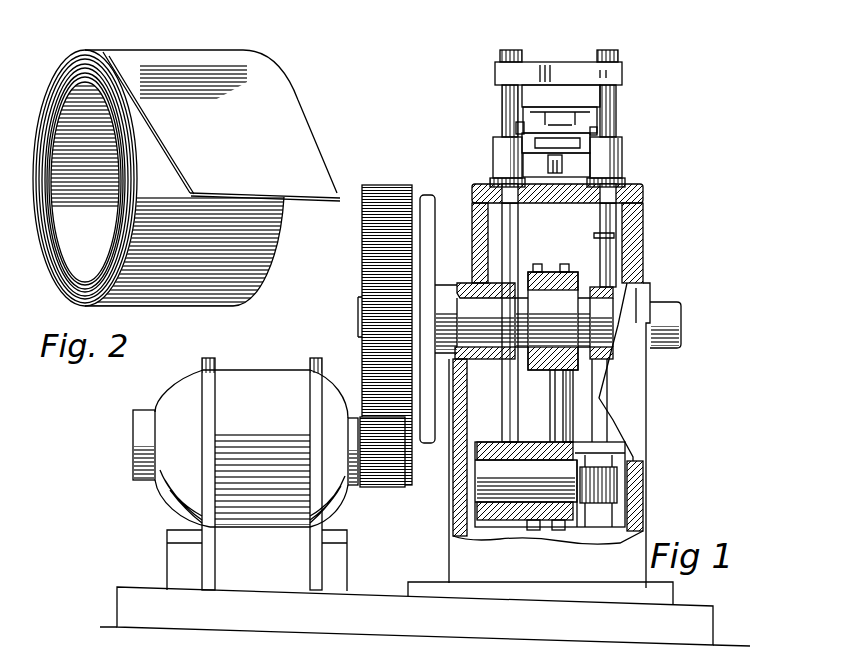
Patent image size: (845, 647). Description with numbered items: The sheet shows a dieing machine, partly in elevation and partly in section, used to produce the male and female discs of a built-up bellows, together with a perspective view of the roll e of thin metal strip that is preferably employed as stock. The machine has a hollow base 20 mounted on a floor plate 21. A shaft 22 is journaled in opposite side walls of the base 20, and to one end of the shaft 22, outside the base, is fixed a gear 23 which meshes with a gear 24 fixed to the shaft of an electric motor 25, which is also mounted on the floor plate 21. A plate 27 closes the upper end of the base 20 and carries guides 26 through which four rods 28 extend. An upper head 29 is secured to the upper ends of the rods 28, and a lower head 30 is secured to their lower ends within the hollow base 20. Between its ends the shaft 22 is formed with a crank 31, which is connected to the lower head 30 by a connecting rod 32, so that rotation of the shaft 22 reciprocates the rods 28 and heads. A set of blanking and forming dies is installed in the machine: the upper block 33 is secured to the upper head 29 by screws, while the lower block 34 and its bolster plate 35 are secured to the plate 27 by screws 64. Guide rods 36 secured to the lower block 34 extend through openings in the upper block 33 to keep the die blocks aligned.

In FIG. 2, the roll of thin metal strip e is at (274, 112).
In FIG. 1, the hollow base 20 is at (636, 446).
In FIG. 1, the floor plate 21 is at (698, 615).
In FIG. 1, the shaft 22 is at (672, 314).
In FIG. 1, the gear 23 is at (386, 217).
In FIG. 1, the gear 24 is at (382, 489).
In FIG. 1, the electric motor 25 is at (245, 386).
In FIG. 1, the guides 26 is at (500, 147).
In FIG. 1, the plate 27 is at (645, 194).
In FIG. 1, the rods 28 is at (593, 247).
In FIG. 1, the head 29 is at (527, 80).
In FIG. 1, the head 30 is at (622, 516).
In FIG. 1, the crank 31 is at (565, 308).
In FIG. 1, the connecting rod 32 is at (572, 403).
In FIG. 1, the upper block 33 is at (595, 102).
In FIG. 1, the lower block 34 is at (587, 157).
In FIG. 1, the bolster plate 35 is at (580, 177).
In FIG. 1, the guide rods 36 is at (516, 132).
In FIG. 1, the screws 64 is at (543, 167).